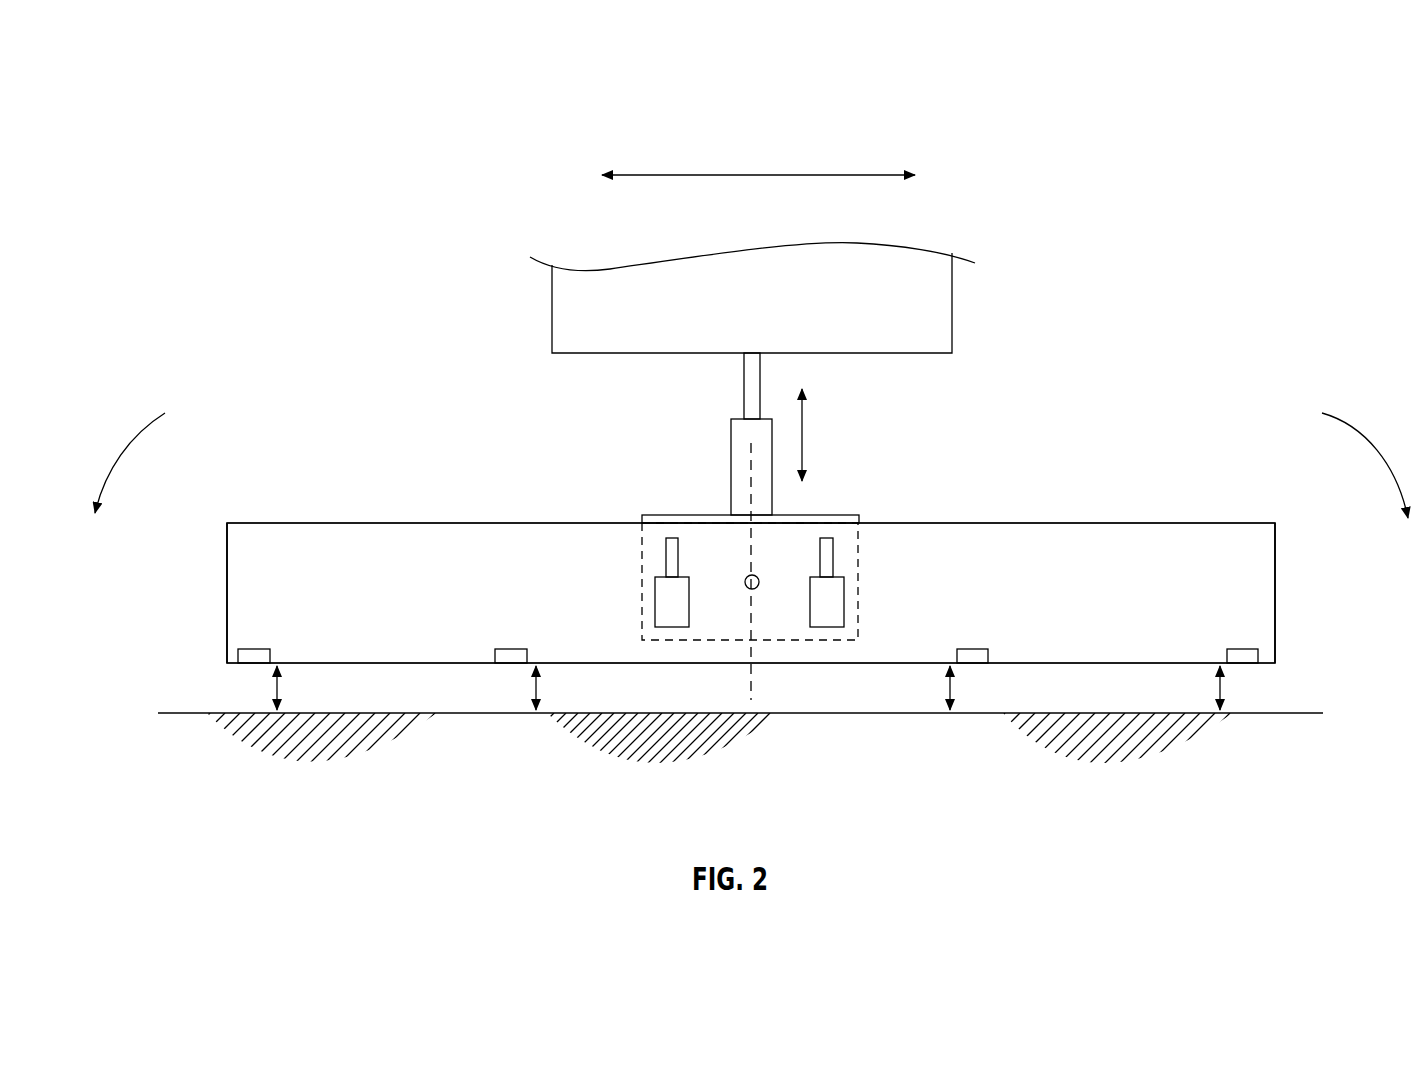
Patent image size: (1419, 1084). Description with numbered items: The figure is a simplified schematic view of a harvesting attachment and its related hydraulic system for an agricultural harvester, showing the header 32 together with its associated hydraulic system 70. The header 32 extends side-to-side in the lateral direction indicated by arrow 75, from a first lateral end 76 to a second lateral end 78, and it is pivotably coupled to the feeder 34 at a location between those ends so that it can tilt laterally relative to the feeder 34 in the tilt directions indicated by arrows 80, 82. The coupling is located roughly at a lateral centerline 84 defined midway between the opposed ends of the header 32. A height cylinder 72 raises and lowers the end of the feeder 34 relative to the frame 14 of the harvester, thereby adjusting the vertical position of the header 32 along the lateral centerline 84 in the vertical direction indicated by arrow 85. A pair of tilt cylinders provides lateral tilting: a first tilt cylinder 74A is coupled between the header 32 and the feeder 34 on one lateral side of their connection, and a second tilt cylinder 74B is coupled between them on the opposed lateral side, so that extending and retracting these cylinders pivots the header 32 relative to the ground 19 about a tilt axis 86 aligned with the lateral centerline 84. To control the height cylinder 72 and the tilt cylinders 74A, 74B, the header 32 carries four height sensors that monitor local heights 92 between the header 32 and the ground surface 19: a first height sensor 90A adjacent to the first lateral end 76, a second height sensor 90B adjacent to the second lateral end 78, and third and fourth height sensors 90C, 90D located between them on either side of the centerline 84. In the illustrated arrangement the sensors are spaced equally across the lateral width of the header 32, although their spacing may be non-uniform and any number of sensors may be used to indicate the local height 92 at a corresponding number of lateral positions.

The frame 14 is at (552, 304).
The ground surface 19 is at (198, 713).
The header 32 is at (455, 523).
The feeder 34 is at (843, 512).
The hydraulic system 70 is at (1120, 423).
The height cylinder 72 is at (731, 487).
The first tilt cylinder 74A is at (663, 612).
The second tilt cylinder 74B is at (837, 610).
The lateral direction arrow 75 is at (780, 175).
The first lateral end 76 is at (227, 553).
The second lateral end 78 is at (1275, 588).
The tilt direction arrow 80 is at (210, 407).
The tilt direction arrow 82 is at (1292, 412).
The lateral centerline 84 is at (751, 465).
The vertical direction arrow 85 is at (803, 448).
The tilt axis 86 is at (744, 582).
The first height sensor 90A is at (257, 649).
The second height sensor 90B is at (1242, 648).
The third height sensor 90C is at (510, 649).
The fourth height sensor 90D is at (967, 648).
The local height 92 is at (283, 692).